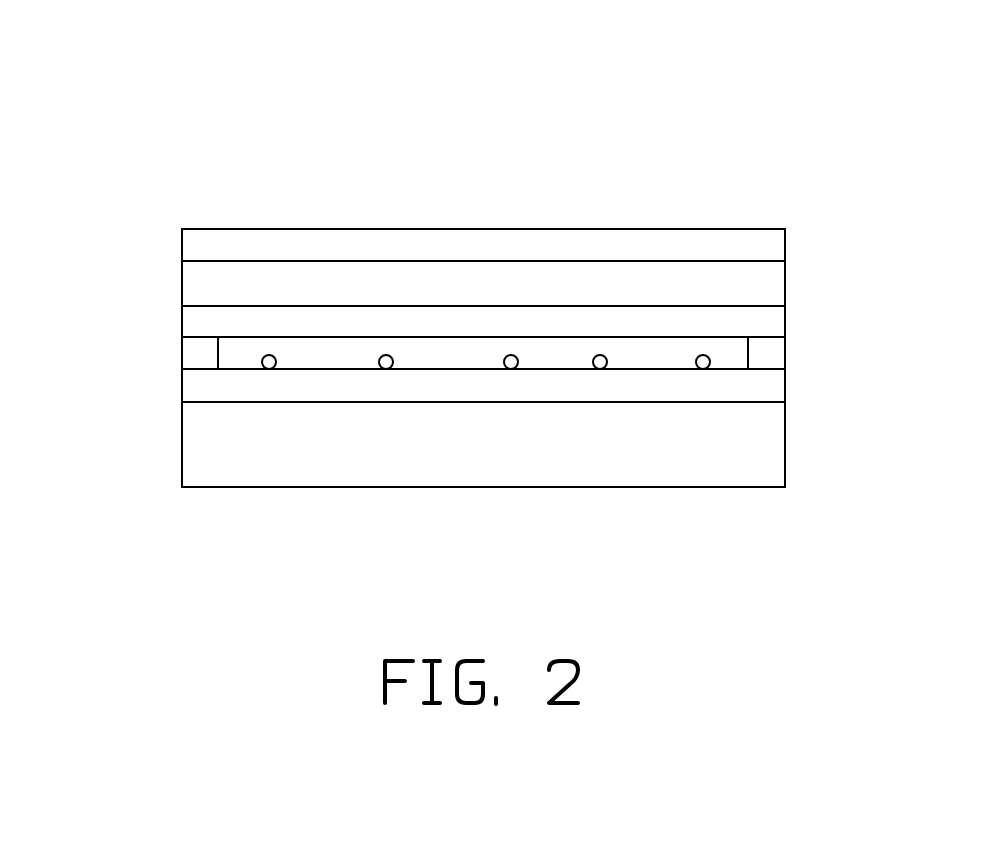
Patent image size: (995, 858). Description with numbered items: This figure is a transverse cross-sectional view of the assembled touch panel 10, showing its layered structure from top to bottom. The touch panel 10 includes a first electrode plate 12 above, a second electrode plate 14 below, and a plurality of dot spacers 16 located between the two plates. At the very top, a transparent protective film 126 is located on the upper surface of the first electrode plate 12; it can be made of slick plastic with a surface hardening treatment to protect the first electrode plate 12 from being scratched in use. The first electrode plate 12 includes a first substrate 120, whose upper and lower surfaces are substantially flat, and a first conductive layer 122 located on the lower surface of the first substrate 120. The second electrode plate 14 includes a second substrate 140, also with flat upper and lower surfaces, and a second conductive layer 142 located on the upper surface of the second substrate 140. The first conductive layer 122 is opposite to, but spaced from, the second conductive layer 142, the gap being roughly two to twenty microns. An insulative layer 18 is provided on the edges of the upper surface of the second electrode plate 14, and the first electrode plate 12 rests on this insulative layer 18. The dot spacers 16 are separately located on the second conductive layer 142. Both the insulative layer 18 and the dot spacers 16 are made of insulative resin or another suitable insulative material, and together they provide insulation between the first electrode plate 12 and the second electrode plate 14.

The touch panel 10 is at (437, 49).
The first electrode plate 12 is at (402, 278).
The transparent protective film 126 is at (205, 250).
The first substrate 120 is at (205, 292).
The first conductive layer 122 is at (205, 323).
The dot spacers 16 is at (258, 363).
The insulative layer 18 is at (768, 352).
The second electrode plate 14 is at (402, 423).
The second conductive layer 142 is at (205, 393).
The second substrate 140 is at (205, 463).